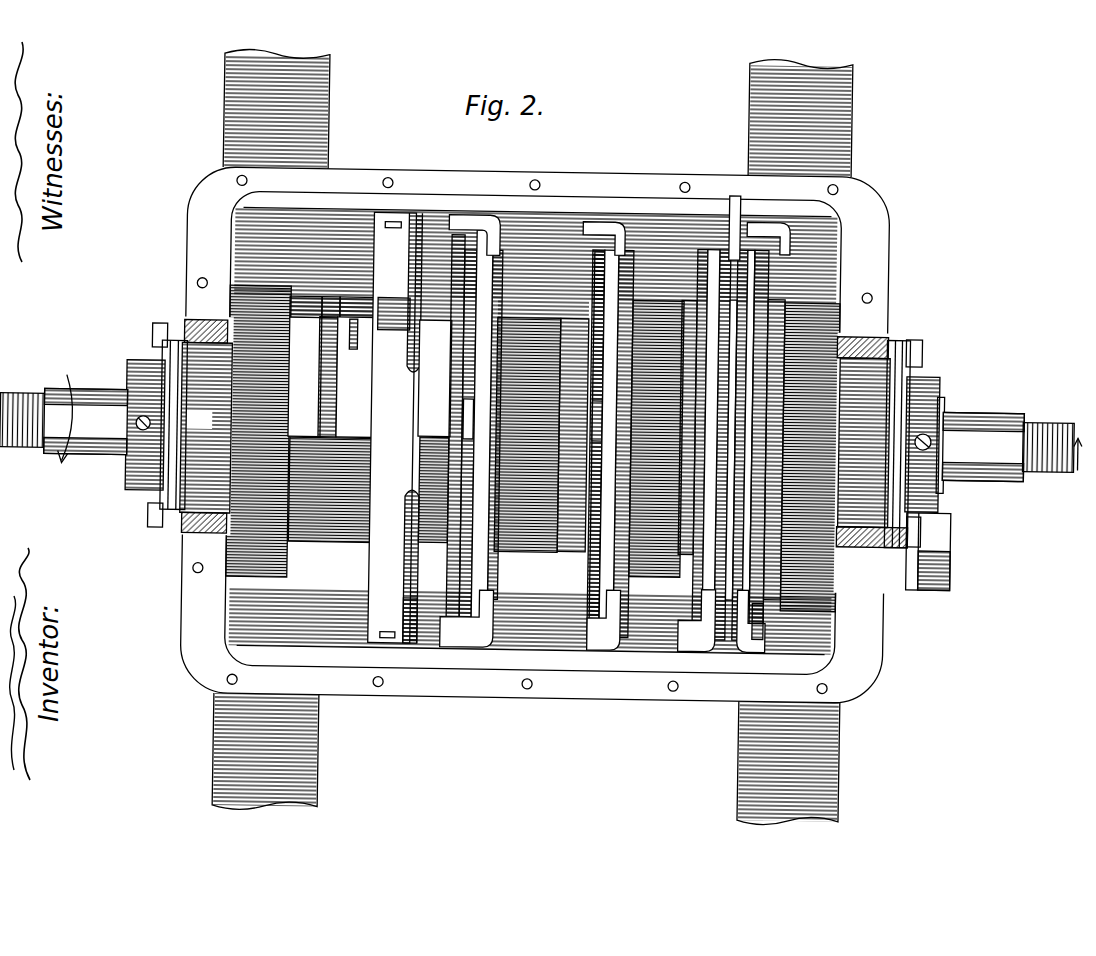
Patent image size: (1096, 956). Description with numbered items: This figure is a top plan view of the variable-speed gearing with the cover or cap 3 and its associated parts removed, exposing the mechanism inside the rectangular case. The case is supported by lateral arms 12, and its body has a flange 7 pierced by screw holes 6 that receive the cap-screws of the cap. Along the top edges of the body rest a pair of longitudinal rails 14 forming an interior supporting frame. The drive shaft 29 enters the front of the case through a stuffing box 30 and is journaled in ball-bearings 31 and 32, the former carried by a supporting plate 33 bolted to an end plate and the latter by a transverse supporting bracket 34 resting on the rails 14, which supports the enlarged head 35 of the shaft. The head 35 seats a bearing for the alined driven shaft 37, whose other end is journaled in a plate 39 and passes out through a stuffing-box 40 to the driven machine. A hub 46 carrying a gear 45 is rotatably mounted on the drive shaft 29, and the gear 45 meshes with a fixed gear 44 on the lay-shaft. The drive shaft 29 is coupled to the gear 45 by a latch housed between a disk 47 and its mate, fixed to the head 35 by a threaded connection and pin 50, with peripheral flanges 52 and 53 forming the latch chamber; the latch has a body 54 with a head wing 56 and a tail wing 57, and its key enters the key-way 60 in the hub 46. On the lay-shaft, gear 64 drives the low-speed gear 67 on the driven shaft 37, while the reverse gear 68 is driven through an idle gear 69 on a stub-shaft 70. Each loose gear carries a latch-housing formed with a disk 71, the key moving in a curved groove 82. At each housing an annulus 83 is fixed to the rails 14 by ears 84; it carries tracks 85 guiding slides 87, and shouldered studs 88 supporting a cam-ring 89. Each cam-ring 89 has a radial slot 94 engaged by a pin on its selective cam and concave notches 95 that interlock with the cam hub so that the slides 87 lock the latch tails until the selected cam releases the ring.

The cover or cap 3 is at (1084, 454).
The screw holes 6 is at (388, 183).
The flange 7 is at (446, 171).
The lateral arms 12 is at (532, 437).
The longitudinal rails 14 is at (479, 204).
The drive shaft 29 is at (71, 399).
The stuffing box 30 is at (129, 378).
The ball-bearing 31 is at (555, 436).
The ball-bearing 32 is at (414, 430).
The supporting plate 33 is at (151, 356).
The transverse supporting bracket 34 is at (424, 428).
The enlarged head 35 is at (436, 320).
The driven shaft 37 is at (975, 405).
The plate 39 is at (924, 376).
The stuffing-box 40 is at (942, 394).
The fixed gear 44 is at (256, 288).
The gear 45 is at (206, 427).
The hub 46 is at (294, 320).
The disk 47 is at (356, 377).
The pin 50 is at (328, 333).
The peripheral flange 52 is at (305, 376).
The peripheral flange 53 is at (352, 323).
The latch body 54 is at (326, 341).
The head wing 56 is at (689, 398).
The tail wing 57 is at (323, 321).
The key-way 60 is at (520, 318).
The gear 64 is at (698, 277).
The gear 67 is at (681, 444).
The gear 68 is at (798, 298).
The idle gear 69 is at (607, 623).
The stub-shaft 70 is at (952, 573).
The disk 71 is at (558, 318).
The curved groove 82 is at (697, 267).
The annulus 83 is at (735, 237).
The ears 84 is at (597, 229).
The tracks 85 is at (487, 271).
The slides 87 is at (739, 357).
The shouldered studs 88 is at (460, 279).
The cam-ring 89 is at (698, 617).
The radial slot 94 is at (449, 393).
The concave notches 95 is at (462, 429).